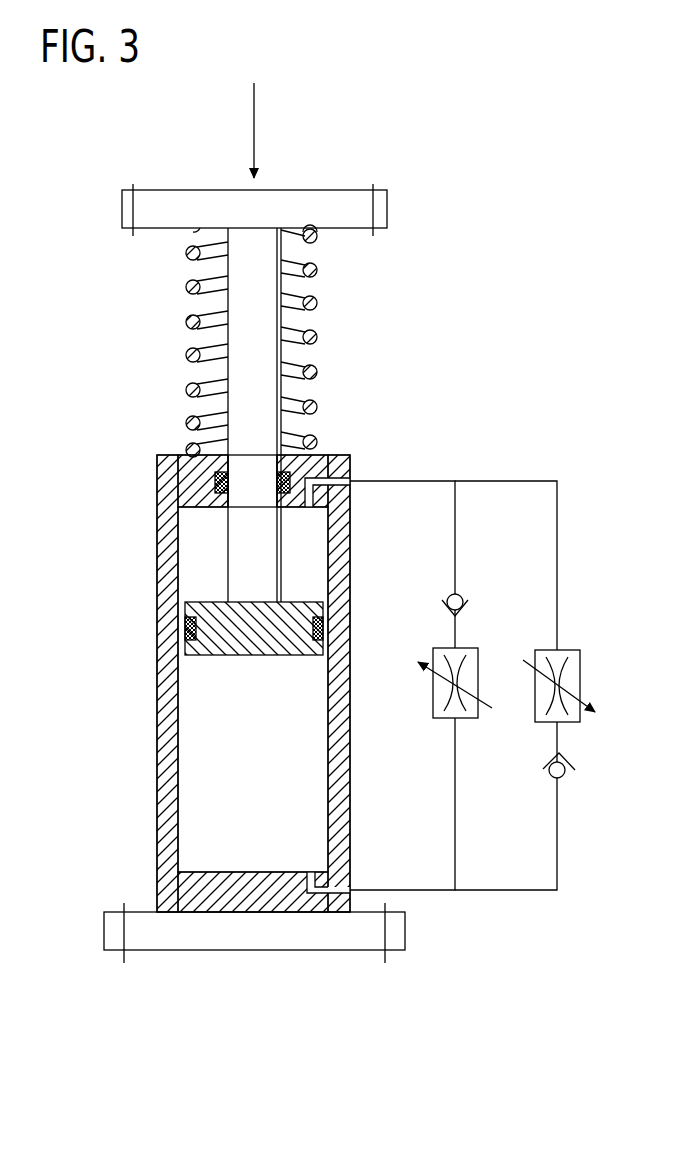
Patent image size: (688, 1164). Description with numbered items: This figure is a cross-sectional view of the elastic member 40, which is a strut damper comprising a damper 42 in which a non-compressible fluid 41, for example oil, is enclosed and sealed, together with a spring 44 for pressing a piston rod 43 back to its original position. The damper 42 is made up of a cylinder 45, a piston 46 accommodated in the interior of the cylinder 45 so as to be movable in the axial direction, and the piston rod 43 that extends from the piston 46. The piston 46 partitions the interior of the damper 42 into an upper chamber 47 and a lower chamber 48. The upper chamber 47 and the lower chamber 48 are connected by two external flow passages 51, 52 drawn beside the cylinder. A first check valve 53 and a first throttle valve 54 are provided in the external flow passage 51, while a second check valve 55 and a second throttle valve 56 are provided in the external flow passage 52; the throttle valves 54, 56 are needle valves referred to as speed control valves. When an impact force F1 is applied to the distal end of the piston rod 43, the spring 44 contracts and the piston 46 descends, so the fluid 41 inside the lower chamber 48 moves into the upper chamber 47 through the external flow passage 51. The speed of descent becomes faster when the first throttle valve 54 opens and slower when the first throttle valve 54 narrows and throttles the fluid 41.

The impact force F1 is at (256, 128).
The elastic member 40 is at (486, 206).
The non-compressible fluid 41 is at (190, 535).
The damper 42 is at (181, 683).
The piston rod 43 is at (248, 345).
The spring 44 is at (320, 337).
The cylinder 45 is at (160, 828).
The piston 46 is at (273, 663).
The upper chamber 47 is at (313, 550).
The lower chamber 48 is at (255, 850).
The external flow passage 51 is at (458, 536).
The external flow passage 52 is at (560, 536).
The first check valve 53 is at (466, 600).
The first throttle valve 54 is at (462, 722).
The second check valve 55 is at (562, 779).
The second throttle valve 56 is at (582, 688).